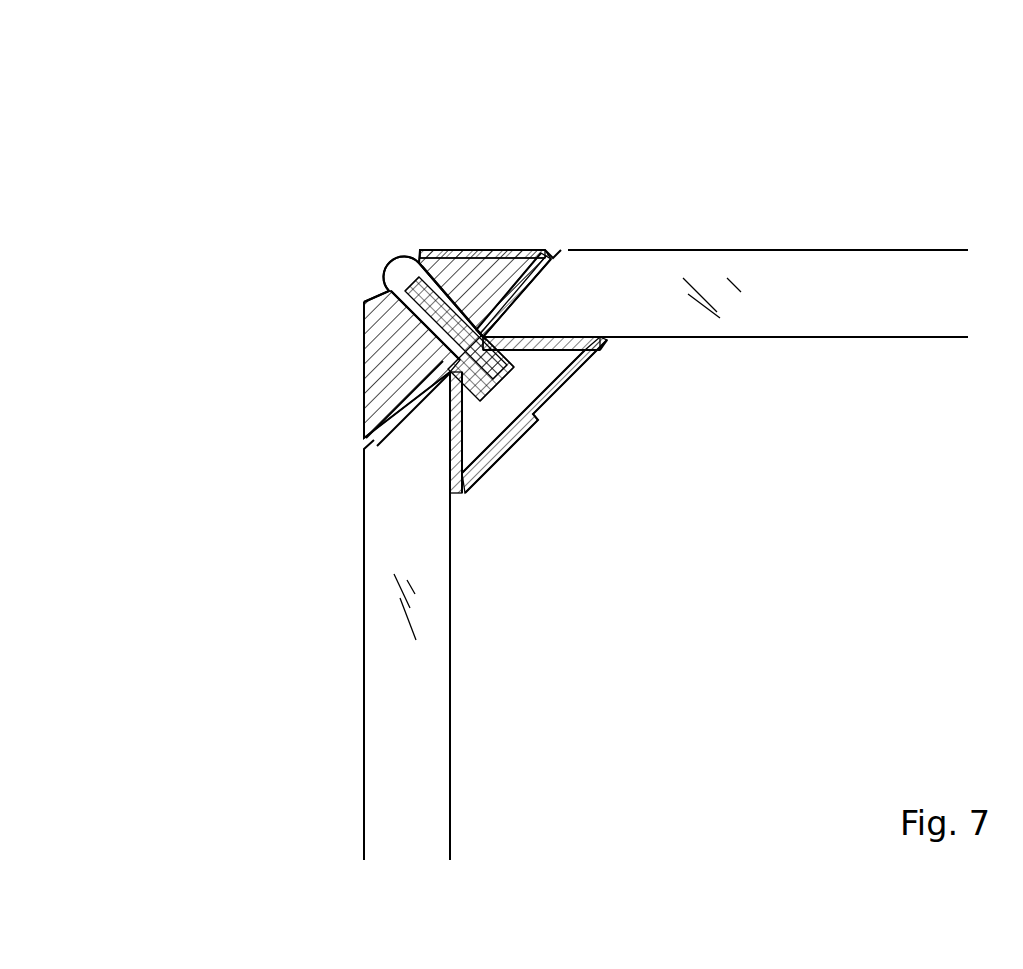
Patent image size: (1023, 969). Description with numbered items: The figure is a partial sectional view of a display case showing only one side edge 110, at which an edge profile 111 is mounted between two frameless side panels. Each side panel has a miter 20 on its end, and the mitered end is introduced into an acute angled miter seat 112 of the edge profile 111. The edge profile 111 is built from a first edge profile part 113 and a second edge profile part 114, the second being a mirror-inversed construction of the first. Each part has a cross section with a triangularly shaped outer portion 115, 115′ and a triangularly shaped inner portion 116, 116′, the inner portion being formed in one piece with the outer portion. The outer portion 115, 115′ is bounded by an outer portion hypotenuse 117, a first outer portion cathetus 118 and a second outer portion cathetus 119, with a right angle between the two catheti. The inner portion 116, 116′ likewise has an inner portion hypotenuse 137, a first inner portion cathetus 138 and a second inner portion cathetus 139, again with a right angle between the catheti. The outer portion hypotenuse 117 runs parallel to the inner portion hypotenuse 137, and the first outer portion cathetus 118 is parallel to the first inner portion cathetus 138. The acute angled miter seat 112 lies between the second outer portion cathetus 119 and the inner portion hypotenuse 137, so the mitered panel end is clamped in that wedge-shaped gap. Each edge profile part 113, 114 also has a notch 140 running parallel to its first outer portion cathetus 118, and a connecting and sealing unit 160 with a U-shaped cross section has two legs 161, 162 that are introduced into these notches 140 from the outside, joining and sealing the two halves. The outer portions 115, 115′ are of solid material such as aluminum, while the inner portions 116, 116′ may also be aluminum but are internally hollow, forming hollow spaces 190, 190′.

The side edge 110 is at (338, 232).
The edge profile 111 is at (428, 245).
The acute angled miter seat 112 is at (500, 327).
The first edge profile part 113 is at (362, 311).
The second edge profile part 114 is at (465, 245).
The triangularly shaped outer portion 115 is at (364, 380).
The triangularly shaped outer portion 115′ is at (415, 252).
The triangularly shaped inner portion 116 is at (468, 472).
The triangularly shaped inner portion 116′ is at (575, 363).
The outer portion hypotenuse 117 is at (498, 250).
The first outer portion cathetus 118 is at (423, 302).
The second outer portion cathetus 119 is at (505, 292).
The inner portion hypotenuse 137 is at (483, 338).
The first inner portion cathetus 138 is at (512, 387).
The second inner portion cathetus 139 is at (553, 388).
The notch 140 is at (500, 350).
The connecting and sealing unit 160 is at (390, 270).
The leg 161 is at (420, 332).
The leg 162 is at (505, 258).
The hollow space 190 is at (460, 418).
The hollow space 190′ is at (547, 357).
The miter 20 is at (545, 268).